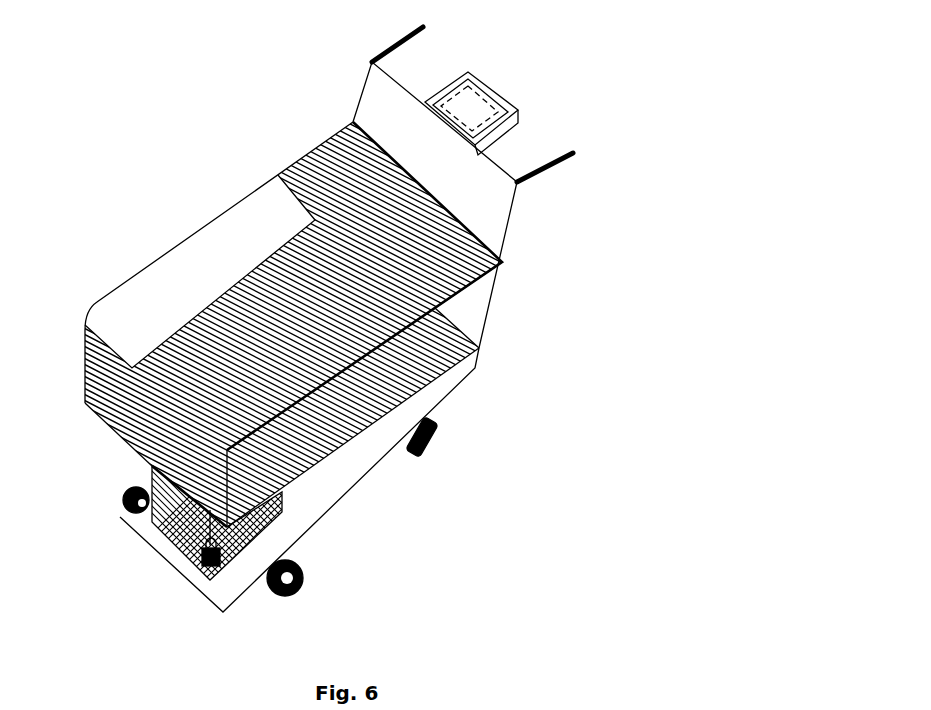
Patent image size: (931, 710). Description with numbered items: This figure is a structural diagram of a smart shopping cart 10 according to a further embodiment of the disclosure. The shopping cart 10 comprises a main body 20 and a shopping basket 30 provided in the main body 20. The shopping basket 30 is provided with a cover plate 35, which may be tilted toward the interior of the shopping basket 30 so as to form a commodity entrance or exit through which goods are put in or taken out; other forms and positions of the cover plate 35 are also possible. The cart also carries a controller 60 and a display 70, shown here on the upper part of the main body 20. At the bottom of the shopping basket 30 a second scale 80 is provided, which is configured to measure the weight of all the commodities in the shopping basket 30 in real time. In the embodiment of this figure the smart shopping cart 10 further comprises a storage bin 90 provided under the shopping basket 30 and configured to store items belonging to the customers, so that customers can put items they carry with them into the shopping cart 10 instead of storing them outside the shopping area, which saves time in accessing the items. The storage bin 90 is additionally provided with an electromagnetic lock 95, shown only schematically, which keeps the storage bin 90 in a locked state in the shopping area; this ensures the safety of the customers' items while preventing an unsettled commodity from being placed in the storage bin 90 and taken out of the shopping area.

The smart shopping cart 10 is at (64, 53).
The main body 20 is at (490, 313).
The shopping basket 30 is at (195, 268).
The cover plate 35 is at (313, 153).
The controller 60 is at (517, 123).
The display 70 is at (472, 97).
The second scale 80 is at (303, 450).
The storage bin 90 is at (240, 547).
The electromagnetic lock 95 is at (207, 557).